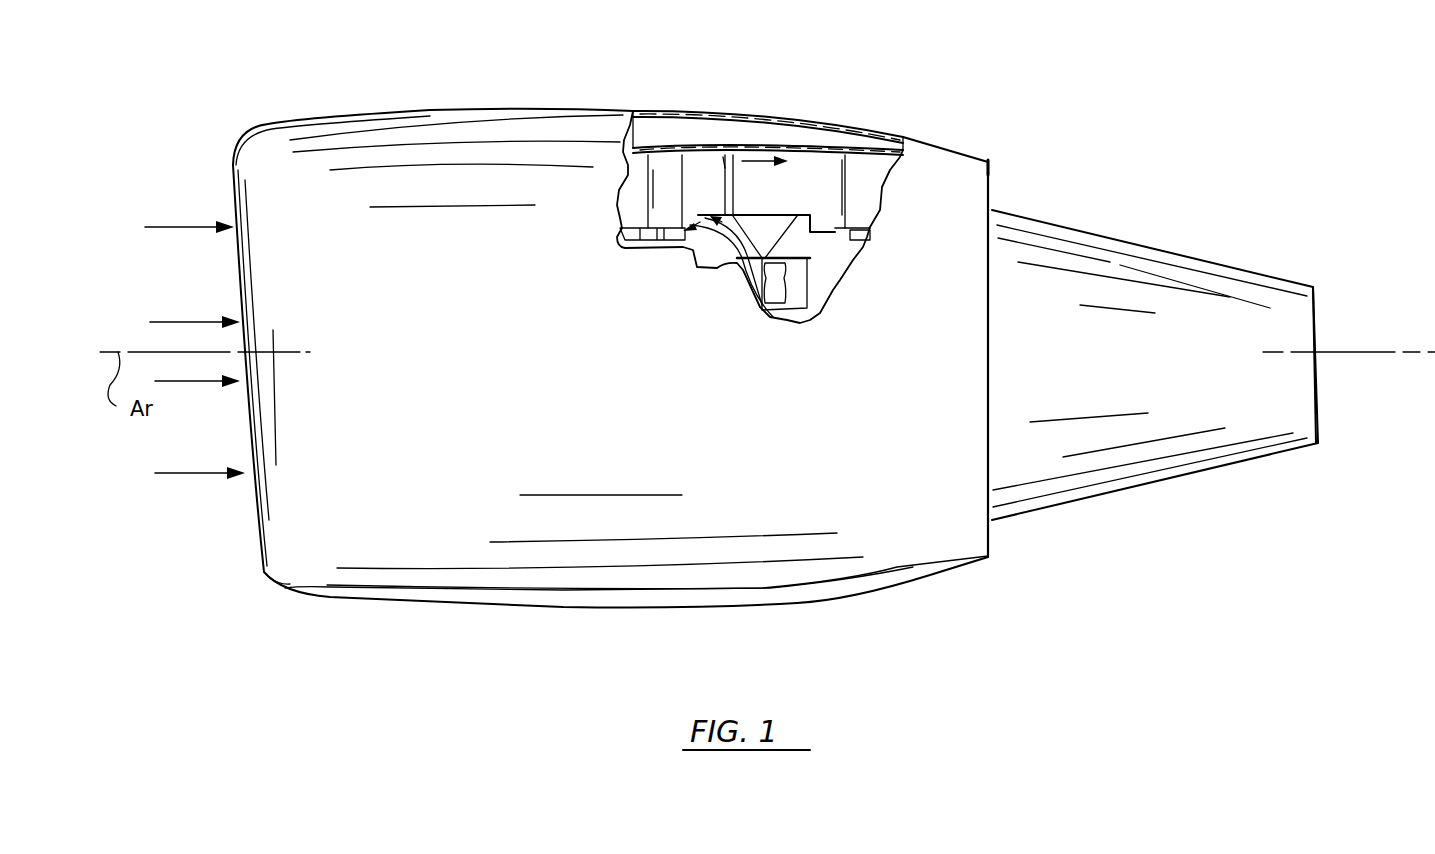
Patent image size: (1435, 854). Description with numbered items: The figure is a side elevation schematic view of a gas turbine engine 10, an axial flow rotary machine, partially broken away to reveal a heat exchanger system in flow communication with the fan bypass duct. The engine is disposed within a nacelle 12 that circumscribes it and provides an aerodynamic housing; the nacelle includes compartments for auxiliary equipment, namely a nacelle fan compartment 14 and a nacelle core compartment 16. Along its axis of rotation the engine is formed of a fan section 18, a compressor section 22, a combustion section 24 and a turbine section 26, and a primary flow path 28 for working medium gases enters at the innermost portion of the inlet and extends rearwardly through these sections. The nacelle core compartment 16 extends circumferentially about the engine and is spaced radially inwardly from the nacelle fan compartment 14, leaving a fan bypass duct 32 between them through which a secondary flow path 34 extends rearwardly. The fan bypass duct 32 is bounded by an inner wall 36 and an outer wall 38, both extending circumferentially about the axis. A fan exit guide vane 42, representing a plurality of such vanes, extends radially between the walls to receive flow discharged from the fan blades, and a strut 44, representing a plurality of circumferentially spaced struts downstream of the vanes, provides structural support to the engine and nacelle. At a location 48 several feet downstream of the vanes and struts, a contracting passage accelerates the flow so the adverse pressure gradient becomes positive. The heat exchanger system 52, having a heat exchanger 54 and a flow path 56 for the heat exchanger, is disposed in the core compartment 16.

The gas turbine engine 10 is at (682, 132).
The nacelle 12 is at (962, 130).
The nacelle fan compartment 14 is at (754, 130).
The nacelle core compartment 16 is at (759, 239).
The fan section 18 is at (397, 354).
The compressor section 22 is at (614, 354).
The combustion section 24 is at (897, 354).
The turbine section 26 is at (1097, 354).
The primary flow path 28 is at (183, 321).
The fan bypass duct 32 is at (632, 172).
The secondary flow path 34 is at (178, 226).
The inner wall 36 is at (620, 225).
The outer wall 38 is at (806, 142).
The fan exit guide vane 42 is at (662, 163).
The strut 44 is at (806, 166).
The location 48 is at (980, 181).
The heat exchanger system 52 is at (845, 230).
The heat exchanger 54 is at (780, 289).
The flow path 56 is at (752, 270).